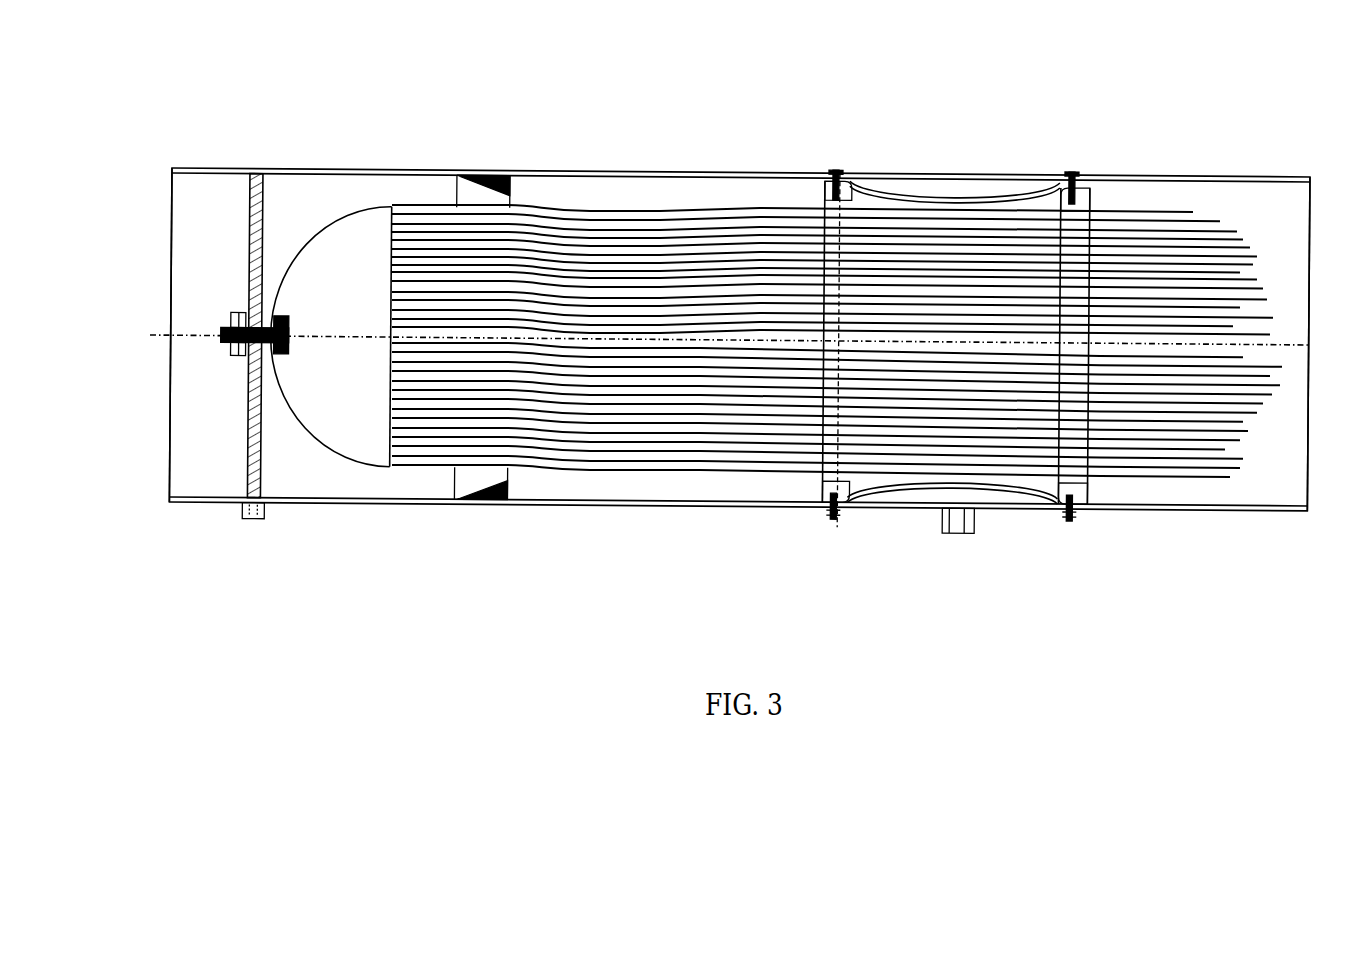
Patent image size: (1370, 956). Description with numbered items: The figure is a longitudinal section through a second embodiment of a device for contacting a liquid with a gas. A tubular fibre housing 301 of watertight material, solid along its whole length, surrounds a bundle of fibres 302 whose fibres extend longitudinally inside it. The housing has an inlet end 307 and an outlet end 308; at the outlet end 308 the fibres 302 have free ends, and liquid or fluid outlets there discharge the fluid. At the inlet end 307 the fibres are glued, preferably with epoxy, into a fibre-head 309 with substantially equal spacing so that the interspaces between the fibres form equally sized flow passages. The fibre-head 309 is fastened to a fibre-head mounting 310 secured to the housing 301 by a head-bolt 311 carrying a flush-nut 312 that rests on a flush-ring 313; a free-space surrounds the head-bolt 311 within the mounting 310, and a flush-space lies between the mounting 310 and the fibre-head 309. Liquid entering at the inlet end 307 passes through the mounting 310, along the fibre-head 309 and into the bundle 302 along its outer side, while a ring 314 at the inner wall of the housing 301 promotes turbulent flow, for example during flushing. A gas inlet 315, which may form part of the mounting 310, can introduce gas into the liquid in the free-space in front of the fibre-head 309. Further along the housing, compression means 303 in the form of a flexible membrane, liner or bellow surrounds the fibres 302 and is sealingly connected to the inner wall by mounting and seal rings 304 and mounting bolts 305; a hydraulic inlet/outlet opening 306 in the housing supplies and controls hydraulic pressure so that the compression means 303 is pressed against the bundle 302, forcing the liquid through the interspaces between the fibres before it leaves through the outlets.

The fibre housing 301 is at (1175, 175).
The bundle of fibres 302 is at (653, 247).
The compression means 303 is at (945, 188).
The mounting and seal rings 304 is at (1077, 178).
The mounting bolts 305 is at (836, 175).
The hydraulic inlet/outlet opening 306 is at (957, 538).
The inlet end 307 is at (150, 214).
The outlet end 308 is at (1318, 470).
The fibre-head 309 is at (347, 240).
The fibre-head mounting 310 is at (257, 168).
The head-bolt 311 is at (222, 332).
The flush-nut 312 is at (228, 350).
The flush-ring 313 is at (243, 358).
The ring 314 is at (590, 167).
The gas inlet 315 is at (257, 518).